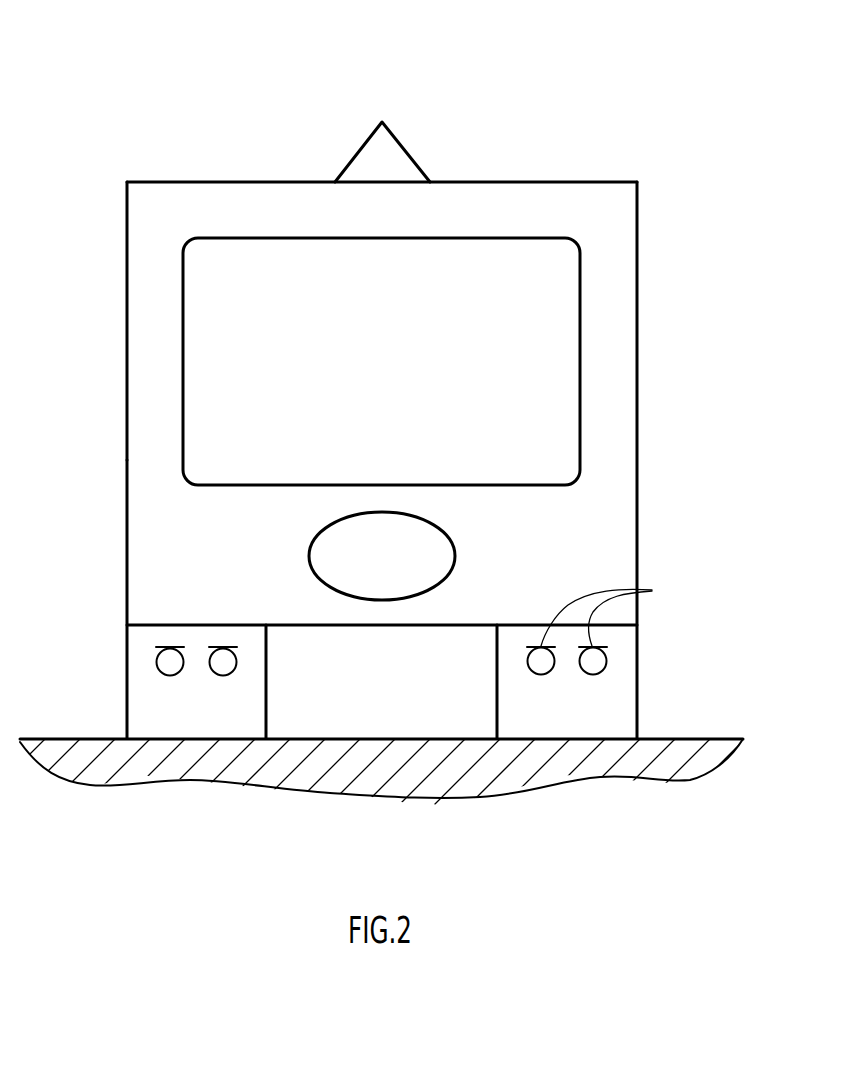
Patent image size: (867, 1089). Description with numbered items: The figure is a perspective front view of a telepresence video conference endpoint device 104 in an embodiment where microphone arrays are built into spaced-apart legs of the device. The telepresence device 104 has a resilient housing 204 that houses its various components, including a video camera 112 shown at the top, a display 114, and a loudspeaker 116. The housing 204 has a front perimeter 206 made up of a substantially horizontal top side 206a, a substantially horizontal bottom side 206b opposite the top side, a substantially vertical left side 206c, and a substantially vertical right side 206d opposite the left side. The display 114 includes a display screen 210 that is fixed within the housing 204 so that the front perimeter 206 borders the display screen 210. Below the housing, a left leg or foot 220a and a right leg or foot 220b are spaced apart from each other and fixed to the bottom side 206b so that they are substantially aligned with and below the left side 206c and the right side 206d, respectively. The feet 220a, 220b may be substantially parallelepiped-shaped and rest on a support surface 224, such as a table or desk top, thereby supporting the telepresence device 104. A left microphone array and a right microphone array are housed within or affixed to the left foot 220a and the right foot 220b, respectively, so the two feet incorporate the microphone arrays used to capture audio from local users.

The telepresence video conference endpoint device 104 is at (207, 66).
The video camera 112 is at (407, 152).
The video display 114 is at (582, 296).
The loudspeaker 116 is at (455, 556).
The resilient housing 204 is at (638, 532).
The front perimeter 206 is at (587, 198).
The top side 206a is at (245, 202).
The bottom side 206b is at (153, 549).
The left side 206c is at (142, 368).
The right side 206d is at (620, 393).
The display screen 210 is at (367, 405).
The left leg or foot 220a is at (127, 711).
The right leg or foot 220b is at (638, 720).
The support surface 224 is at (718, 766).